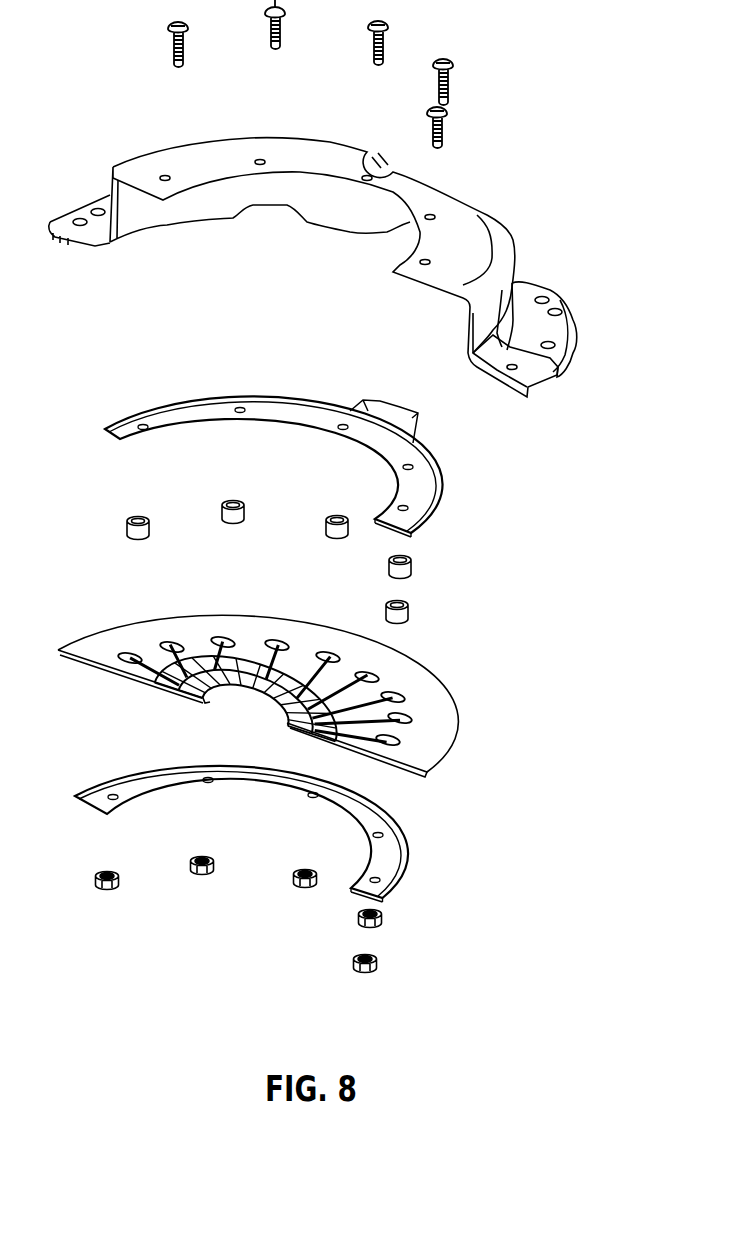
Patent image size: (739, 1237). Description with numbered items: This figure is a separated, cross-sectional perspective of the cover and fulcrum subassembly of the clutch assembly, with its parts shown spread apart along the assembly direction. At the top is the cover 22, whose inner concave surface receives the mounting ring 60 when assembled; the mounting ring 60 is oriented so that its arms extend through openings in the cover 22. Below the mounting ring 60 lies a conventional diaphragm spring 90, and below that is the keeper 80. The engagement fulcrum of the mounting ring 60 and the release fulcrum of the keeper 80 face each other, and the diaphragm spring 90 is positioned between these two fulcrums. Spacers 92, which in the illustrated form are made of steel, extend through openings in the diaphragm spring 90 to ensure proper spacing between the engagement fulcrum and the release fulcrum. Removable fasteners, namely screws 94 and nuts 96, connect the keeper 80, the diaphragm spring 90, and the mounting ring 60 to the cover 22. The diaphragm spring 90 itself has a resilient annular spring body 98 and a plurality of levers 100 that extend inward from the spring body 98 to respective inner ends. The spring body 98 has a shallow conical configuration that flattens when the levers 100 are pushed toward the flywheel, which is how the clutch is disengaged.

The cover 22 is at (567, 330).
The mounting ring 60 is at (430, 458).
The keeper 80 is at (418, 858).
The diaphragm spring 90 is at (254, 687).
The spacers 92 is at (137, 541).
The screws 94 is at (447, 110).
The nuts 96 is at (203, 876).
The spring body 98 is at (449, 710).
The levers 100 is at (290, 702).